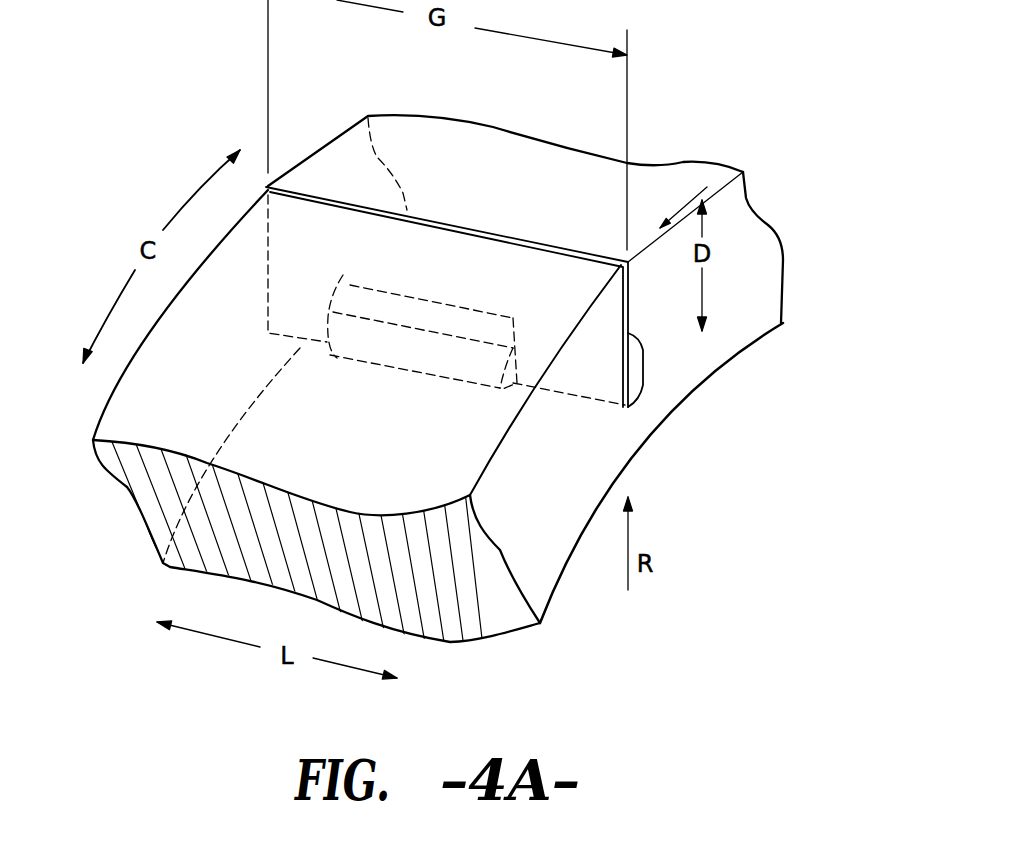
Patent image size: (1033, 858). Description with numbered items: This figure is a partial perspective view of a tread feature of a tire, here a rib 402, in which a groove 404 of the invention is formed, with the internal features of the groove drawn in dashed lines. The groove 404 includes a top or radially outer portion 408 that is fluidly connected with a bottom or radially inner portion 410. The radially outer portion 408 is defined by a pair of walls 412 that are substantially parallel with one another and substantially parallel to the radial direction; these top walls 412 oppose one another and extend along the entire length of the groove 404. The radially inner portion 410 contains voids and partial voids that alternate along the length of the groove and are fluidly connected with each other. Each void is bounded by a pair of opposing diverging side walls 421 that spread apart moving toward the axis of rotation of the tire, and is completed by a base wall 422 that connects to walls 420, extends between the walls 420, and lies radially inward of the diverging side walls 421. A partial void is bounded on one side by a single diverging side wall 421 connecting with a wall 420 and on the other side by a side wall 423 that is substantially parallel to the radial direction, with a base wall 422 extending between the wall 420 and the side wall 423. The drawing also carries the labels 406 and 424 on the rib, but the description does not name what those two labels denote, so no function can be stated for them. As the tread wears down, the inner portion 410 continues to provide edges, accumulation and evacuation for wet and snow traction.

The rib 402 is at (193, 110).
The groove 404 is at (445, 213).
The outer circumferential surface 406 is at (107, 400).
The radially outer portion 408 is at (645, 300).
The radially inner portion 410 is at (652, 368).
The walls 412 is at (630, 283).
The wall 420 is at (652, 352).
The diverging side walls 421 is at (638, 337).
The base wall 422 is at (633, 408).
The side wall 423 is at (610, 372).
The top front edge strip 424 is at (295, 188).